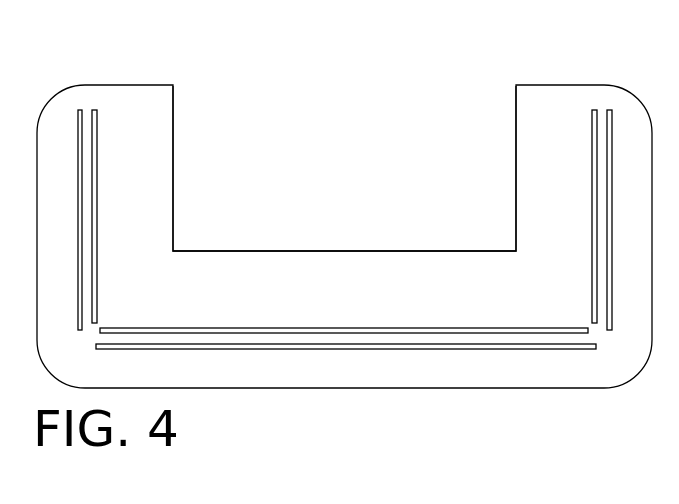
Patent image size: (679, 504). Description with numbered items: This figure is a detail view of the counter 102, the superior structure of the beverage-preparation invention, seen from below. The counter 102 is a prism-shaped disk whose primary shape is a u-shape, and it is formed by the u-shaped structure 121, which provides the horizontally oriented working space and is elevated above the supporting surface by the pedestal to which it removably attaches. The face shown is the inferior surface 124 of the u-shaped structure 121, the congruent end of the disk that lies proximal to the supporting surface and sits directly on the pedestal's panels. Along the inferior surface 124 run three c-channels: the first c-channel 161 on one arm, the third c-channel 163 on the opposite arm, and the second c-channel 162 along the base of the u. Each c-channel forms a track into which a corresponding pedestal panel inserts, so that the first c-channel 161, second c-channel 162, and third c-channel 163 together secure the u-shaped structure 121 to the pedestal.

The counter 102 is at (113, 72).
The u-shaped structure 121 is at (174, 141).
The inferior surface 124 is at (297, 274).
The first c-channel 161 is at (594, 185).
The second c-channel 162 is at (389, 350).
The third c-channel 163 is at (95, 203).